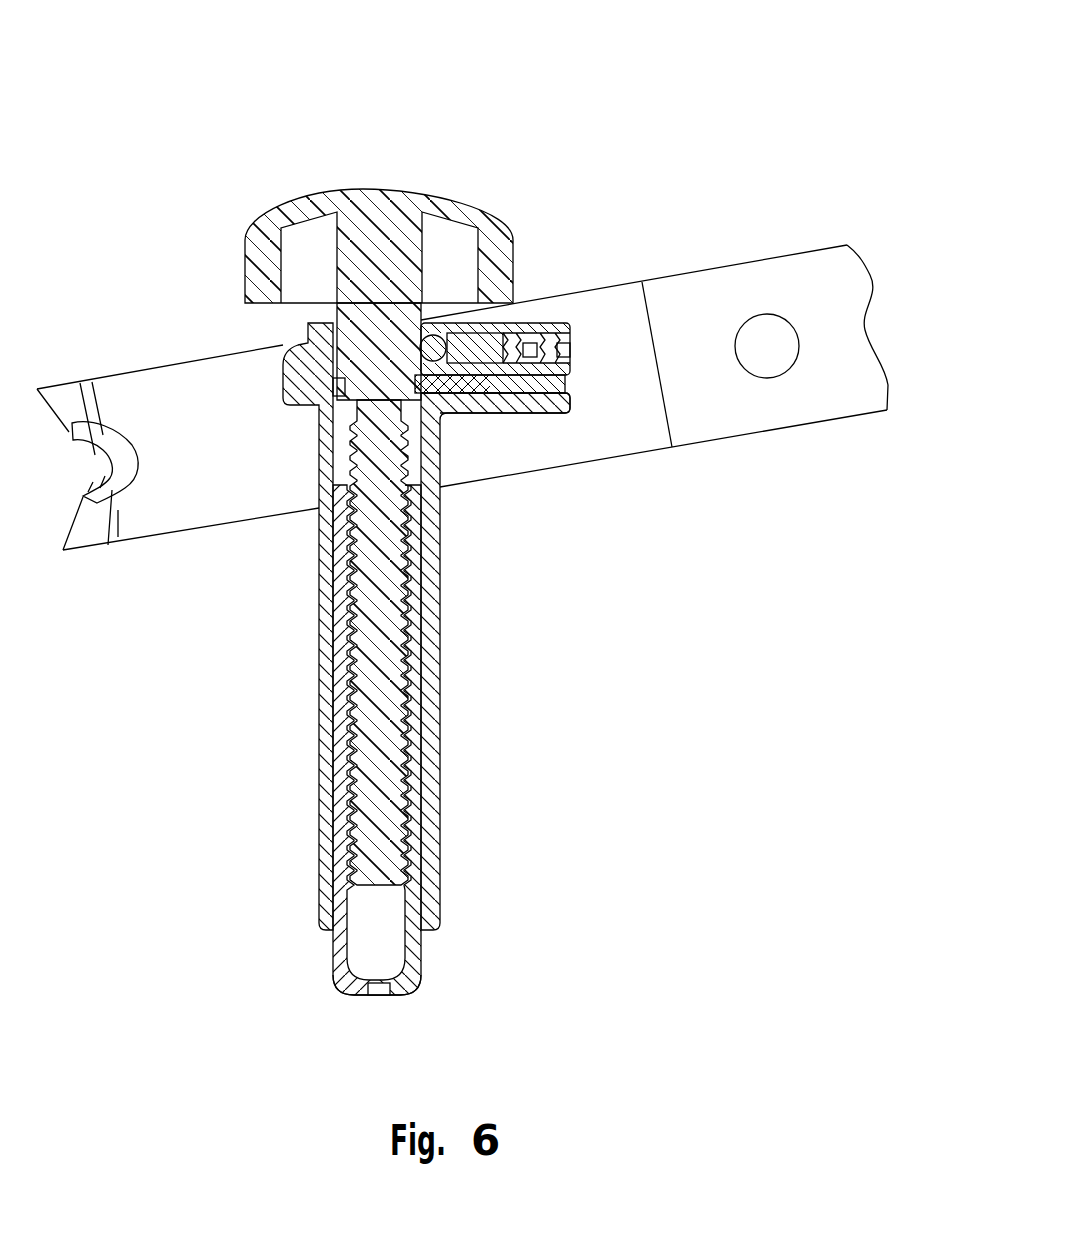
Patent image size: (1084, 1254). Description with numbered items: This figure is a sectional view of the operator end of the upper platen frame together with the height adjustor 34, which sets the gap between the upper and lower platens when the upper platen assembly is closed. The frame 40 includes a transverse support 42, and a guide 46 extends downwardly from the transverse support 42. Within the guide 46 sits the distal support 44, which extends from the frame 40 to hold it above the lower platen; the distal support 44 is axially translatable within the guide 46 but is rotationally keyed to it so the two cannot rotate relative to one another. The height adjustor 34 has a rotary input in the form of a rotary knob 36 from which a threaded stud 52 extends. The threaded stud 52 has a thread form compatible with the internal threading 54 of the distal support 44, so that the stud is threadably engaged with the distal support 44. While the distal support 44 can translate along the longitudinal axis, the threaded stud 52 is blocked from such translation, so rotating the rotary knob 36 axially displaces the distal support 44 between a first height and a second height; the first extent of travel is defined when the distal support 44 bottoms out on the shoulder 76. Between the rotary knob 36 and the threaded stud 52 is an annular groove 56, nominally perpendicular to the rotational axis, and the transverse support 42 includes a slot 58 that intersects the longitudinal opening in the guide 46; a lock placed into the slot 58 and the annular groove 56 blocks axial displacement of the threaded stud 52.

The height adjustor 34 is at (664, 101).
The rotary knob 36 is at (372, 208).
The frame 40 is at (680, 305).
The transverse support 42 is at (480, 412).
The distal support 44 is at (340, 950).
The guide 46 is at (432, 725).
The threaded stud 52 is at (345, 448).
The internal threading 54 is at (425, 607).
The annular groove 56 is at (330, 380).
The slot 58 is at (575, 380).
The shoulder 76 is at (330, 403).